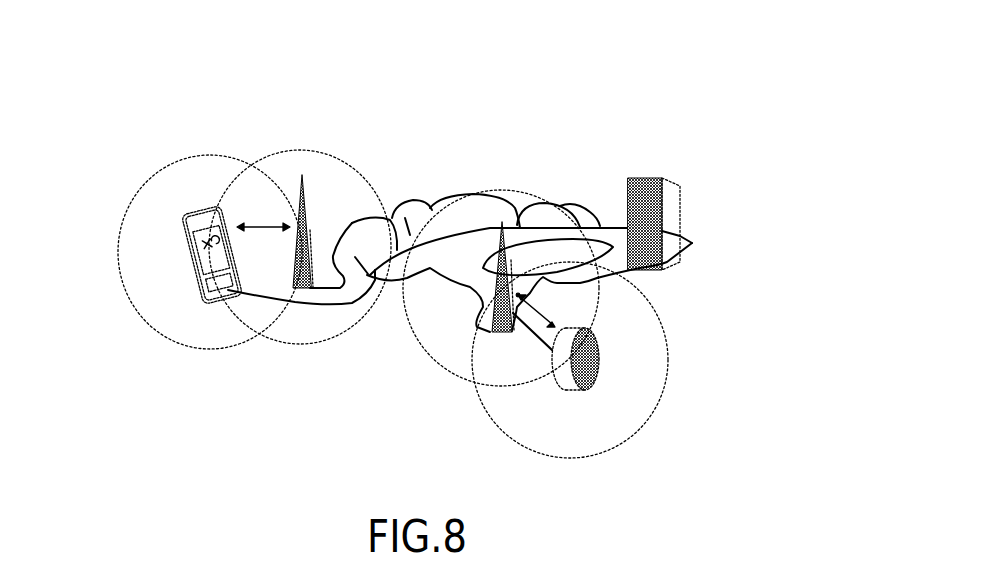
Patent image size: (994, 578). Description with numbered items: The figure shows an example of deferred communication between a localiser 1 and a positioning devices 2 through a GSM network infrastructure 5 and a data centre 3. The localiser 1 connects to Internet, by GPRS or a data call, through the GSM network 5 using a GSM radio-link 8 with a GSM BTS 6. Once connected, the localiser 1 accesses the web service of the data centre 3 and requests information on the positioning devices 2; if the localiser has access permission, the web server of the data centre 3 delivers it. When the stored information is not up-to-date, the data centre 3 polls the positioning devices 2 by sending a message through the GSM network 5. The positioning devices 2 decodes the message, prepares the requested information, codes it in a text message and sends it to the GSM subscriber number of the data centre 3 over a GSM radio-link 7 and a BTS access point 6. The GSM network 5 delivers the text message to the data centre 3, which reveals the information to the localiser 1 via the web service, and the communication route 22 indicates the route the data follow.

The localiser 1 is at (192, 287).
The positioning devices 2 is at (597, 377).
The data centre 3 is at (652, 182).
The GSM network infrastructure 5 is at (485, 210).
The GSM BTS 6 is at (300, 300).
The GSM radio-link 7 is at (533, 305).
The GSM radio-link 8 is at (267, 227).
The communication route 22 is at (367, 275).